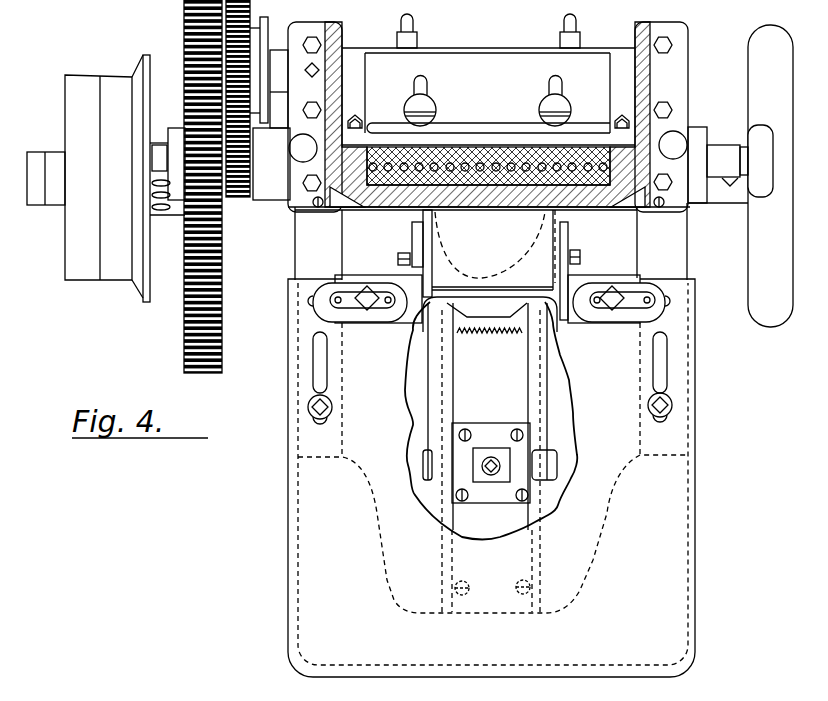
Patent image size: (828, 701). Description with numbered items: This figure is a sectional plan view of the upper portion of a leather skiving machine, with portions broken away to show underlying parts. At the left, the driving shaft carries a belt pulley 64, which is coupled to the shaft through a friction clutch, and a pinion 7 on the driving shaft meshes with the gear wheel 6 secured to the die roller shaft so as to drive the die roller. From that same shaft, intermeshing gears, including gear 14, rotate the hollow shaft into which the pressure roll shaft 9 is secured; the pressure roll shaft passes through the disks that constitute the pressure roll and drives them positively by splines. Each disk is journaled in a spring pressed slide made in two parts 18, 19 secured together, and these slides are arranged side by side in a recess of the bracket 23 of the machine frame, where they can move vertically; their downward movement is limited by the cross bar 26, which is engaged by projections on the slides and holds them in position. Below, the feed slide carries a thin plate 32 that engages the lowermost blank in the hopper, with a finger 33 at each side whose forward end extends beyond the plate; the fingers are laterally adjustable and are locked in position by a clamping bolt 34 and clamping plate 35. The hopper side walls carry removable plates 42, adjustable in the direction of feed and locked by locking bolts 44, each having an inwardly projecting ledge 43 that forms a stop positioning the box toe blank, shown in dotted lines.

The gear wheel 6 is at (200, 318).
The pinion 7 is at (173, 209).
The pressure roll shaft 9 is at (717, 157).
The intermeshing gear 14 is at (242, 180).
The slide part 18 is at (600, 147).
The slide part 19 is at (607, 133).
The bracket 23 is at (333, 53).
The cross bar 26 is at (450, 143).
The thin plate 32 is at (507, 363).
The finger 33 is at (432, 362).
The clamping bolt 34 is at (493, 473).
The clamping plate 35 is at (481, 448).
The removable plate 42 is at (558, 214).
The ledge 43 is at (428, 211).
The locking bolt 44 is at (580, 255).
The belt pulley 64 is at (88, 273).